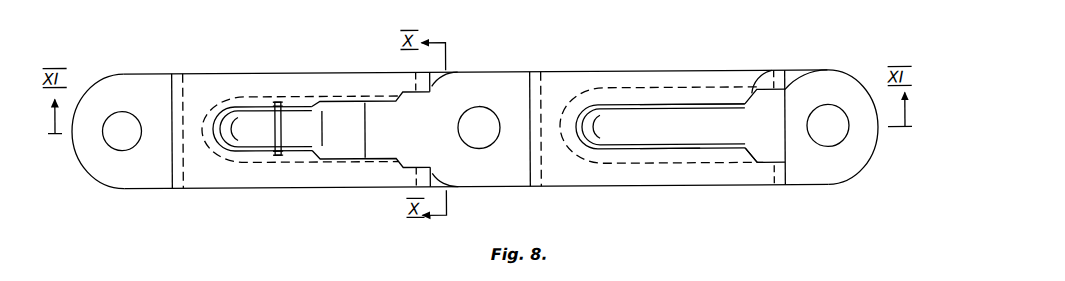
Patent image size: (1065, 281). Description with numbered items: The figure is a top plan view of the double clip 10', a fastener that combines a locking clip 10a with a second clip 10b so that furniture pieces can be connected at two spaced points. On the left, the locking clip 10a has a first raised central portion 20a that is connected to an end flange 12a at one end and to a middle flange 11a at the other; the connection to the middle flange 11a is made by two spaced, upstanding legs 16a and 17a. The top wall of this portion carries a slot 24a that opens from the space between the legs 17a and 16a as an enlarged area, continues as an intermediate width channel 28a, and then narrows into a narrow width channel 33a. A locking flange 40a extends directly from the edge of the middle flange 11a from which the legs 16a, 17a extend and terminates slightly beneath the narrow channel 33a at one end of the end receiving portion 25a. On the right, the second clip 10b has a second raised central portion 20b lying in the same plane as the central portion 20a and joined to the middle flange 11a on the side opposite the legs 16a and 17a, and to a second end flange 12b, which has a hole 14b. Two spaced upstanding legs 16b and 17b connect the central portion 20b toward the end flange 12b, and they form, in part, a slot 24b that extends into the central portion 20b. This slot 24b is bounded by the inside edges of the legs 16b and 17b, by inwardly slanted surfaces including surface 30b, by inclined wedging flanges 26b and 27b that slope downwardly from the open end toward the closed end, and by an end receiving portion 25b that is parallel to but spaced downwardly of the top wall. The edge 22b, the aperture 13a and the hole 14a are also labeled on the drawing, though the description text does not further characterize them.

The double clip 10' is at (475, 41).
The locking clip 10a is at (302, 194).
The second clip 10b is at (783, 47).
The middle flange 11a is at (492, 164).
The end flange 12a is at (100, 152).
The second end flange 12b is at (827, 167).
The central aperture 13a is at (473, 115).
The pivot hole 14a is at (122, 120).
The hole 14b is at (833, 133).
The upstanding leg 16a is at (434, 89).
The upstanding leg 16b is at (807, 79).
The upstanding leg 17a is at (462, 188).
The upstanding leg 17b is at (796, 176).
The first raised central portion 20a is at (193, 158).
The second raised central portion 20b is at (556, 95).
The edge 22b is at (772, 76).
The slot 24a is at (353, 133).
The slot 24b is at (653, 136).
The end receiving portion 25a is at (240, 135).
The end receiving portion 25b is at (588, 137).
The inclined wedging flange 26b is at (703, 111).
The inclined wedging flange 27b is at (667, 151).
The intermediate width channel 28a is at (368, 134).
The inwardly slanted surface 30b is at (752, 155).
The narrow width channel 33a is at (250, 117).
The locking flange 40a is at (322, 129).